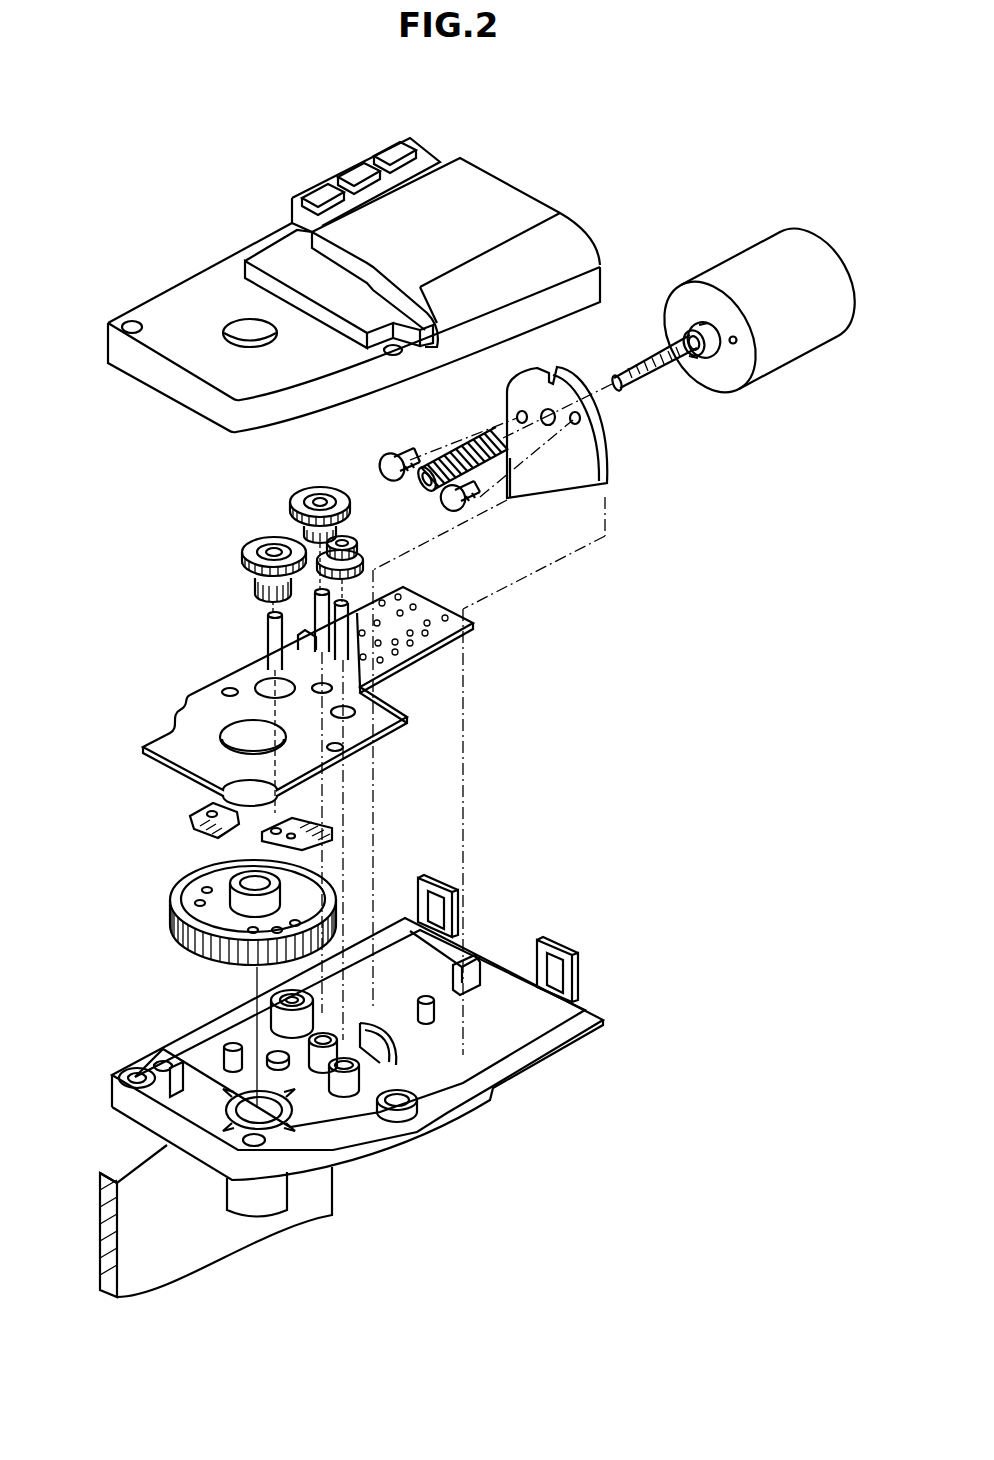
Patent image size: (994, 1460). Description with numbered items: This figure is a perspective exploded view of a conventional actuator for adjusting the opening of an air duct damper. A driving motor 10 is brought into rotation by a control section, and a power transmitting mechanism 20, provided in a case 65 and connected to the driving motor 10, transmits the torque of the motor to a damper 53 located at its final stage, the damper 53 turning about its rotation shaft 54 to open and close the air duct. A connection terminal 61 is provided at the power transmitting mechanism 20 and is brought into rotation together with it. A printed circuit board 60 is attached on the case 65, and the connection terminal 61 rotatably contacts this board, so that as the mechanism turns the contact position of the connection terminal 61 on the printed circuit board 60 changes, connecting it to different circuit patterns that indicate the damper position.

The driving motor 10 is at (740, 247).
The power transmitting mechanism 20 is at (393, 815).
The damper 53 is at (222, 1235).
The rotation shaft 54 is at (280, 1193).
The printed circuit board 60 is at (180, 698).
The connection terminal 61 is at (192, 816).
The case 65 is at (495, 175).